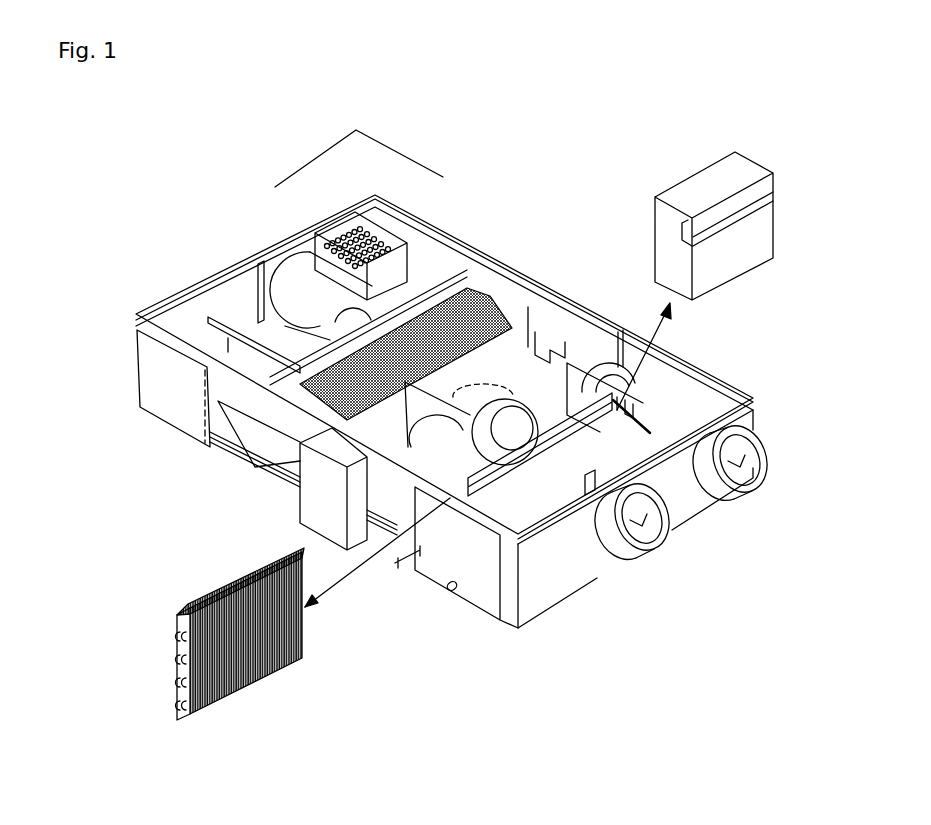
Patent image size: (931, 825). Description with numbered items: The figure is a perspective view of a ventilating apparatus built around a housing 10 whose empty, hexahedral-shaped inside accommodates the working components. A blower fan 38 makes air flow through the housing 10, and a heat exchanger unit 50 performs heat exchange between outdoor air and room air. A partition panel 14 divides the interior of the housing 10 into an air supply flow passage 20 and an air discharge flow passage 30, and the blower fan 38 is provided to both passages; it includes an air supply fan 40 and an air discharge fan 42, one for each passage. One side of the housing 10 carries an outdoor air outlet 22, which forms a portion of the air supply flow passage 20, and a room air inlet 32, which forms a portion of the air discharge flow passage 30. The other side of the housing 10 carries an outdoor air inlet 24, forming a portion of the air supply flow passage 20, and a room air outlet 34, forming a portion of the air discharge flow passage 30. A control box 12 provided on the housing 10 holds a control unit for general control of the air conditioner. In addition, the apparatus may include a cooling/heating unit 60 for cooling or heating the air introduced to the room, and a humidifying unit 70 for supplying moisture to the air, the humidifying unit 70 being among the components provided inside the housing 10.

The housing 10 is at (508, 617).
The control box 12 is at (312, 507).
The partition panel 14 is at (590, 363).
The air supply flow passage 20 is at (638, 530).
The outdoor air outlet 22 is at (630, 557).
The outdoor air inlet 24 is at (134, 357).
The air discharge flow passage 30 is at (732, 474).
The room air inlet 32 is at (728, 500).
The room air outlet 34 is at (253, 288).
The blower fan 38 is at (359, 146).
The air supply fan 40 is at (477, 382).
The air discharge fan 42 is at (294, 250).
The heat exchanger unit 50 is at (252, 433).
The cooling/heating unit 60 is at (287, 682).
The humidifying unit 70 is at (681, 168).